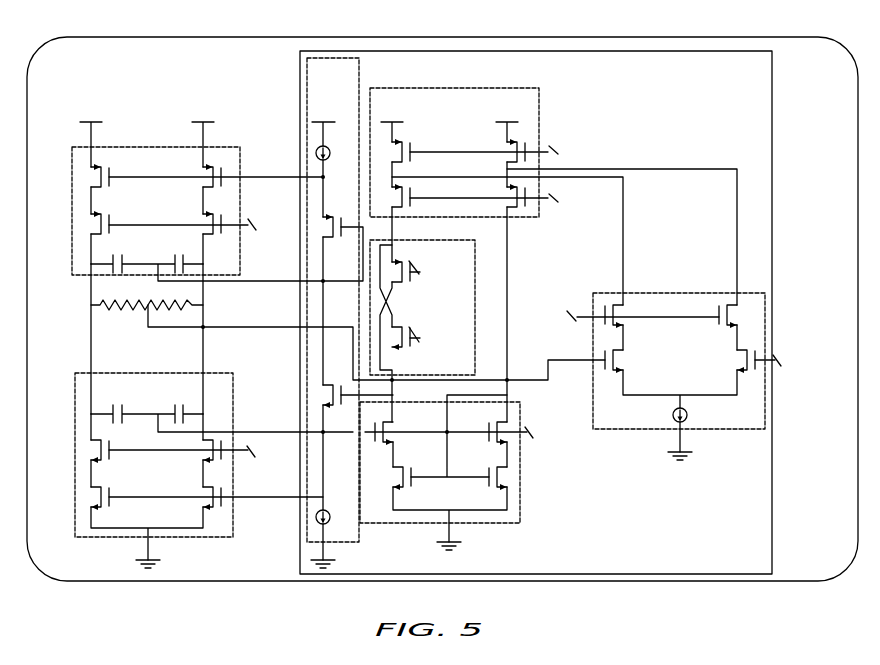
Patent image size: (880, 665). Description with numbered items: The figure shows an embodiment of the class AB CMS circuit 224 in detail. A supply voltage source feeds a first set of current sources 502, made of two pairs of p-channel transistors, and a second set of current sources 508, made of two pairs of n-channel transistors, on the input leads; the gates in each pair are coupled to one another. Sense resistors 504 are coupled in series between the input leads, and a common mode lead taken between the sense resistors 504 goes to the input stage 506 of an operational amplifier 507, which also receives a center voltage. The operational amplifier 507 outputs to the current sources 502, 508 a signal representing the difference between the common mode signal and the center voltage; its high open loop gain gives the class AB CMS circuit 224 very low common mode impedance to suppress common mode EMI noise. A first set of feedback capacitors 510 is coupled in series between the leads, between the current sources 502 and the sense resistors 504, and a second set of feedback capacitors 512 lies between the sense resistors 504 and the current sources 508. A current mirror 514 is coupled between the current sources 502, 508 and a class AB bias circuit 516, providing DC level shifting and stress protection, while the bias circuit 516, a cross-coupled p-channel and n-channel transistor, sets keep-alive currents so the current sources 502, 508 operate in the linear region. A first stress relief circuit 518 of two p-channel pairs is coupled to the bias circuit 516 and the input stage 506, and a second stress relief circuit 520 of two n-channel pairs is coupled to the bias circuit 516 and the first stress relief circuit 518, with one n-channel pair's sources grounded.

The class AB CMS circuit 224 is at (83, 38).
The first set of current sources 502 is at (170, 169).
The sense resistors 504 is at (169, 303).
The input stage 506 is at (755, 421).
The operational amplifier 507 is at (752, 83).
The second set of current sources 508 is at (228, 401).
The first set of feedback capacitors 510 is at (174, 259).
The second set of feedback capacitors 512 is at (171, 410).
The current mirror 514 is at (350, 87).
The class AB bias circuit 516 is at (470, 308).
The first stress relief circuit 518 is at (475, 114).
The second stress relief circuit 520 is at (462, 506).